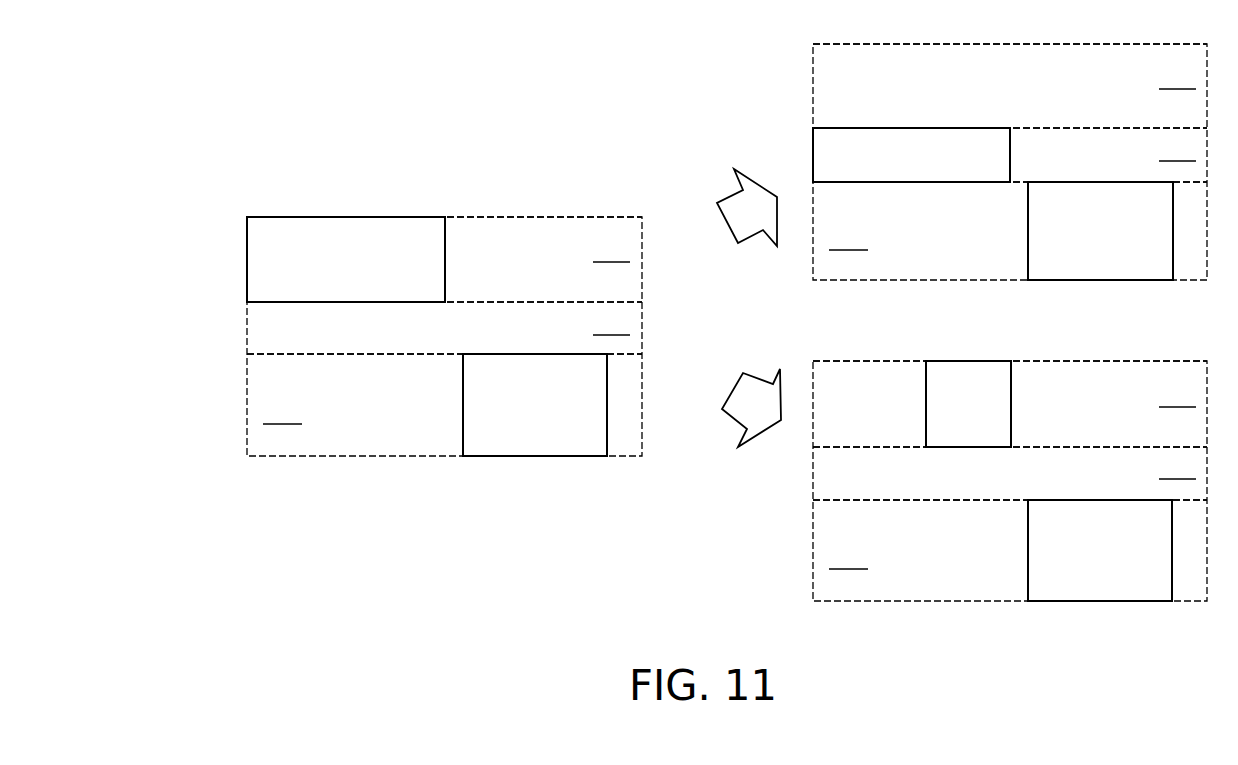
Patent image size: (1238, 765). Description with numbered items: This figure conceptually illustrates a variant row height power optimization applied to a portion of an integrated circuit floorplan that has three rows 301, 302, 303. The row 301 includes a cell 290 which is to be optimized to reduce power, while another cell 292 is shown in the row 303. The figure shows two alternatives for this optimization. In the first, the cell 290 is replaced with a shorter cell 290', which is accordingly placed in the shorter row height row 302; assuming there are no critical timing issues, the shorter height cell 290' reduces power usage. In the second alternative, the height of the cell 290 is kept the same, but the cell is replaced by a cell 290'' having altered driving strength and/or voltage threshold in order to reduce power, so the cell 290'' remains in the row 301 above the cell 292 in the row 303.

The cell 290 is at (304, 237).
The shorter cell 290' is at (863, 134).
The cell with altered driving strength and/or voltage threshold 290'' is at (1004, 380).
The cell 292 is at (780, 419).
The row 301 is at (727, 226).
The row 302 is at (727, 304).
The row 303 is at (727, 376).